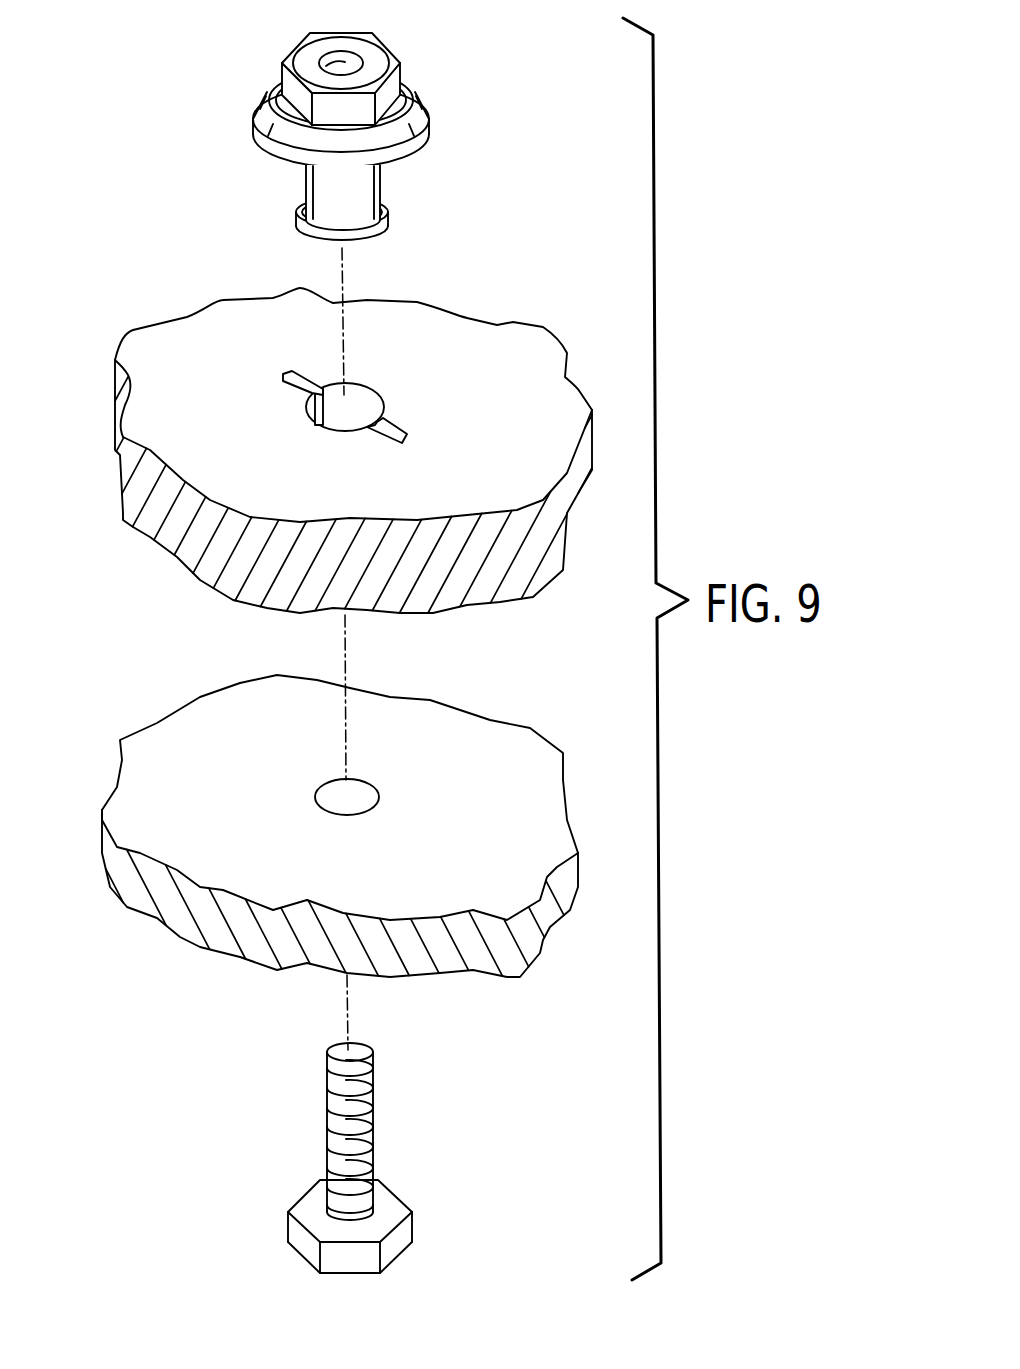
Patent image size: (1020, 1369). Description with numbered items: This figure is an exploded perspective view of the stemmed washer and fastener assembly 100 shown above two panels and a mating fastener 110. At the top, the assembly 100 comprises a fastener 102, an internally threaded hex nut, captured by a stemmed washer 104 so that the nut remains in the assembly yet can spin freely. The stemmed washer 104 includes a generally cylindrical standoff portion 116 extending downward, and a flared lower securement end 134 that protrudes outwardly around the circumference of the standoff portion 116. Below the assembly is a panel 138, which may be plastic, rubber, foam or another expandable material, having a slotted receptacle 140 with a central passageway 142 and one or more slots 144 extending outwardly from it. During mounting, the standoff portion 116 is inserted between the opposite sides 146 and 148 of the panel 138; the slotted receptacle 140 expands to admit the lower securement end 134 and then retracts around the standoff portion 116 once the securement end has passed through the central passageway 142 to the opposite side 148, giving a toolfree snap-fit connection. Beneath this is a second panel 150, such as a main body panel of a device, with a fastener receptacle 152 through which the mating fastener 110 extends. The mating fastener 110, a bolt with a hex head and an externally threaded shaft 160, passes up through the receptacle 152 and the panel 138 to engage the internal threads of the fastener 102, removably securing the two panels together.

The stemmed washer and fastener assembly 100 is at (166, 33).
The fastener 102 is at (335, 64).
The stemmed washer 104 is at (375, 118).
The standoff portion 116 is at (387, 193).
The lower securement end 134 is at (378, 224).
The panel 138 is at (375, 459).
The slotted receptacle 140 is at (344, 428).
The central passageway 142 is at (367, 389).
The slots 144 is at (373, 407).
The side of panel 146 is at (375, 405).
The opposite side of panel 148 is at (353, 503).
The panel 150 is at (340, 823).
The fastener receptacle 152 is at (360, 765).
The externally threaded shaft 160 is at (376, 1122).
The mating fastener 110 is at (379, 1148).